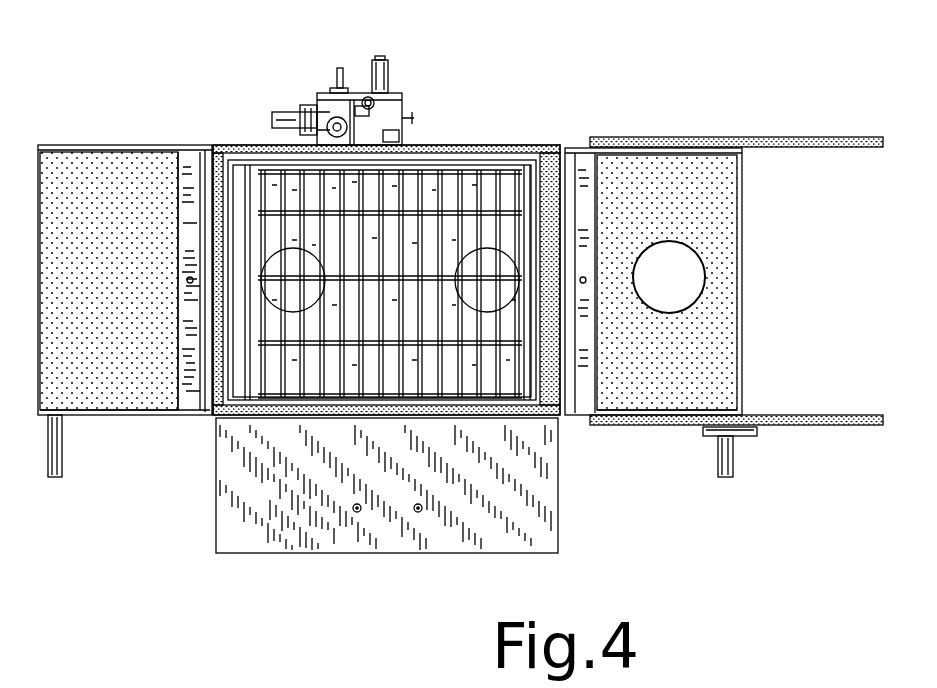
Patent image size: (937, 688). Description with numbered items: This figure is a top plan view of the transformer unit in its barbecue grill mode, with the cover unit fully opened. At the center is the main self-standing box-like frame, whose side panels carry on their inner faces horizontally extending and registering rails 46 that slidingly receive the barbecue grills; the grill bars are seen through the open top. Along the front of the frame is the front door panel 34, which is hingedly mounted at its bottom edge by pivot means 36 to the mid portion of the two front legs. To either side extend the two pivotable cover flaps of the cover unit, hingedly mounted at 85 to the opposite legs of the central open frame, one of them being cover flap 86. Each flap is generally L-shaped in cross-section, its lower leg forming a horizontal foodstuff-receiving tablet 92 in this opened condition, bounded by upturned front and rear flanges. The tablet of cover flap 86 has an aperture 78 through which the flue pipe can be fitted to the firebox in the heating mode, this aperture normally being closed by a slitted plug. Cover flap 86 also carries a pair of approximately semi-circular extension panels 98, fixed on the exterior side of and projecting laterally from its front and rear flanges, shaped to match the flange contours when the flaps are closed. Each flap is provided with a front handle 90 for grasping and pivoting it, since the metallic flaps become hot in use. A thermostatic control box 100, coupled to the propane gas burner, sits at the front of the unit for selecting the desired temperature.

The front door panel 34 is at (532, 468).
The pivot means 36 is at (263, 420).
The rails 46 is at (468, 152).
The aperture 78 is at (704, 268).
The hinge 85 is at (200, 385).
The cover flap 86 is at (705, 400).
The front handle 90 is at (62, 455).
The foodstuff-receiving tablet 92 is at (147, 160).
The extension panels 98 is at (643, 137).
The thermostatic control box 100 is at (358, 83).